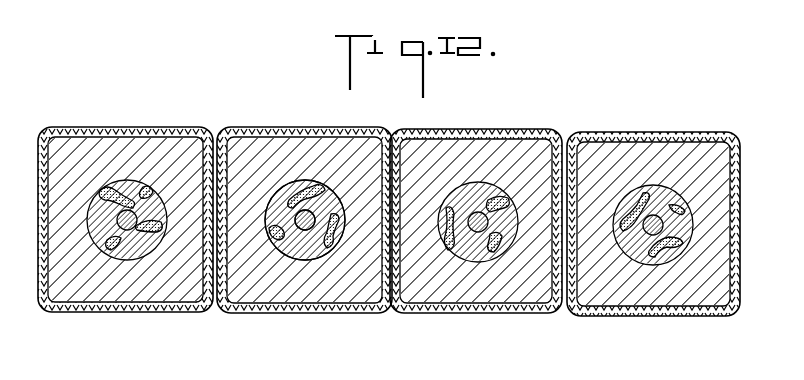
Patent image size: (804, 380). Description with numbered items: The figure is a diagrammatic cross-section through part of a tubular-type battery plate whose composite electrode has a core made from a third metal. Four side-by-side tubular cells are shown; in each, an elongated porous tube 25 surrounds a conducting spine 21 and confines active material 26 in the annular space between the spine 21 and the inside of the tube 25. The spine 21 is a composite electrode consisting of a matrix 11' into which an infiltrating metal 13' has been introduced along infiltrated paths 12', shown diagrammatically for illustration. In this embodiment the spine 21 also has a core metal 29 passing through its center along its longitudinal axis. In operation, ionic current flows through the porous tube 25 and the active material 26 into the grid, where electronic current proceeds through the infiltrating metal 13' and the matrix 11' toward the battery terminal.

The core metal 29 is at (127, 200).
The porous tube 25 is at (228, 127).
The conducting spine 21 is at (306, 181).
The active material 26 is at (351, 142).
The matrix 11' is at (325, 263).
The paths 12' is at (288, 279).
The infiltrating metal 13' is at (319, 280).